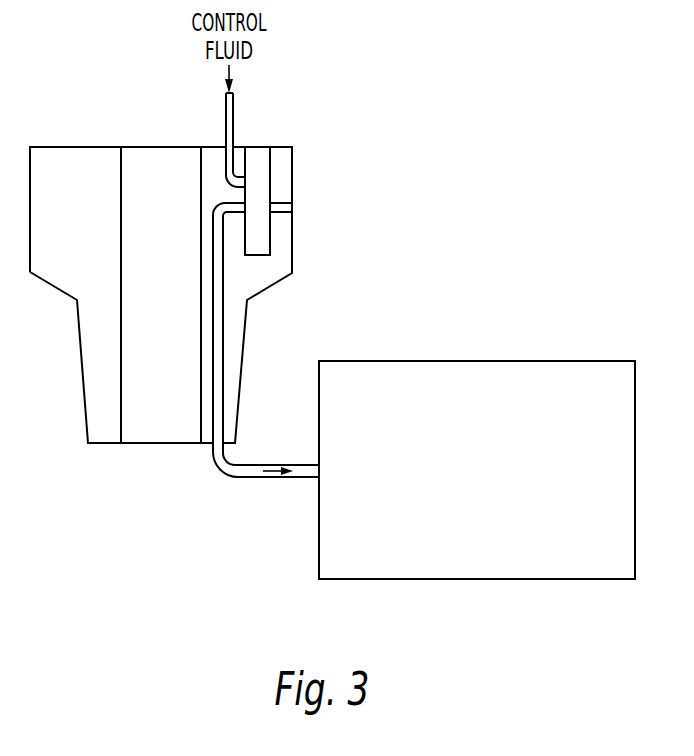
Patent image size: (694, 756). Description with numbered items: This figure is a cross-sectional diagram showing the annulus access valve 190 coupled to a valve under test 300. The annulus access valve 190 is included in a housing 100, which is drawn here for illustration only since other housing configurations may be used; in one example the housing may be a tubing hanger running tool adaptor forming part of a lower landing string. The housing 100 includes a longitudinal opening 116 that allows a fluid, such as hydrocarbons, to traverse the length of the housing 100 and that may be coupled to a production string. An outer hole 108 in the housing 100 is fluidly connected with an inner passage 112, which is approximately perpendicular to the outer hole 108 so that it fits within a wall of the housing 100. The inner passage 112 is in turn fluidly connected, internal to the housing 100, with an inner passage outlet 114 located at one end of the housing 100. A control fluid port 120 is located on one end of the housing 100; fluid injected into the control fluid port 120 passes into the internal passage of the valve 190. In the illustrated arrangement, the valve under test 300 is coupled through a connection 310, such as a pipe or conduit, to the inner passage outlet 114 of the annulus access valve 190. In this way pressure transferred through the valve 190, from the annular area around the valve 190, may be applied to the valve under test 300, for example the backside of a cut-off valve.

The housing 100 is at (81, 370).
The outer hole 108 is at (278, 213).
The inner passage 112 is at (218, 347).
The inner passage outlet 114 is at (215, 445).
The longitudinal opening 116 is at (148, 430).
The control fluid port 120 is at (230, 147).
The annulus access valve 190 is at (263, 168).
The valve under test 300 is at (478, 361).
The connection 310 is at (265, 464).